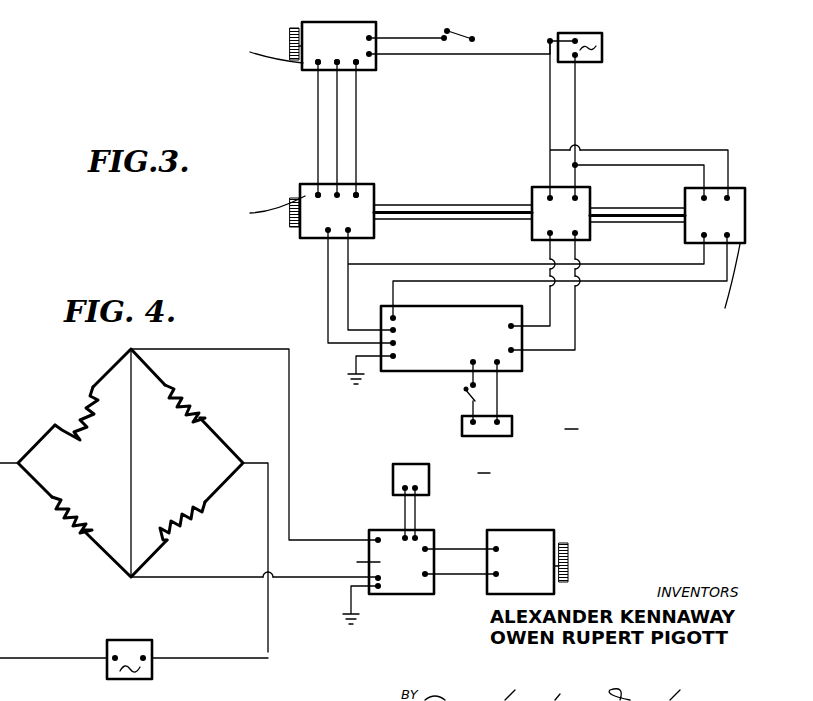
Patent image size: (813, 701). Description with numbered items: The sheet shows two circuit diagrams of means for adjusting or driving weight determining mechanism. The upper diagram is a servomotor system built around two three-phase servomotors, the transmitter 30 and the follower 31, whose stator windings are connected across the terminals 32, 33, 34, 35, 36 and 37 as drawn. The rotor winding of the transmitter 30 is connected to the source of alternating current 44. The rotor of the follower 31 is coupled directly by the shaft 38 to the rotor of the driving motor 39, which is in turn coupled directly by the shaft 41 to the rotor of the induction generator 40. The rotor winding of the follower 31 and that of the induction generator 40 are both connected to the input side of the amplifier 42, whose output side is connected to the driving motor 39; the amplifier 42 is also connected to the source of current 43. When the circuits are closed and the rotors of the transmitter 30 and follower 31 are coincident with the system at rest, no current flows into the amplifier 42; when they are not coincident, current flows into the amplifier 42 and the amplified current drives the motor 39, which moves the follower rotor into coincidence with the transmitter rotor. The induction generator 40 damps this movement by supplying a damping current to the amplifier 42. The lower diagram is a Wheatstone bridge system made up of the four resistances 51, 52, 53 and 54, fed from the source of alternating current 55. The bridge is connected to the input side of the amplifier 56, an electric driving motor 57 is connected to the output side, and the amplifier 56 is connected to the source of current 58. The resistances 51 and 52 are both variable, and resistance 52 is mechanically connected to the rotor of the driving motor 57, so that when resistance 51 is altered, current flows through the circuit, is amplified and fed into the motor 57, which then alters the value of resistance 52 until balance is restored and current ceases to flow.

In FIG. 3, the servomotor transmitter 30 is at (333, 31).
In FIG. 3, the servomotor follower 31 is at (305, 226).
In FIG. 3, the terminal 32 is at (316, 67).
In FIG. 3, the terminal 33 is at (353, 66).
In FIG. 3, the terminal 34 is at (362, 66).
In FIG. 3, the terminal 35 is at (300, 189).
In FIG. 3, the terminal 36 is at (317, 194).
In FIG. 3, the terminal 37 is at (357, 194).
In FIG. 3, the shaft 38 is at (465, 210).
In FIG. 3, the driving motor 39 is at (590, 200).
In FIG. 3, the induction generator 40 is at (735, 194).
In FIG. 3, the shaft 41 is at (680, 223).
In FIG. 3, the amplifier 42 is at (512, 353).
In FIG. 3, the source of current 43 is at (503, 428).
In FIG. 3, the source of alternating current 44 is at (600, 52).
In FIG. 4, the resistance 51 is at (65, 405).
In FIG. 4, the resistance 52 is at (67, 515).
In FIG. 4, the resistance 53 is at (200, 518).
In FIG. 4, the resistance 54 is at (187, 400).
In FIG. 4, the source of alternating current 55 is at (140, 645).
In FIG. 4, the amplifier 56 is at (418, 587).
In FIG. 4, the electric driving motor 57 is at (543, 540).
In FIG. 4, the source of current 58 is at (423, 482).